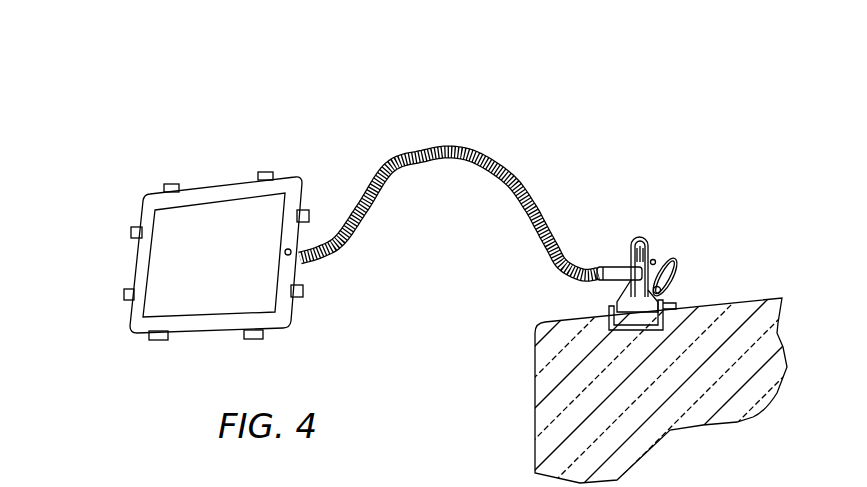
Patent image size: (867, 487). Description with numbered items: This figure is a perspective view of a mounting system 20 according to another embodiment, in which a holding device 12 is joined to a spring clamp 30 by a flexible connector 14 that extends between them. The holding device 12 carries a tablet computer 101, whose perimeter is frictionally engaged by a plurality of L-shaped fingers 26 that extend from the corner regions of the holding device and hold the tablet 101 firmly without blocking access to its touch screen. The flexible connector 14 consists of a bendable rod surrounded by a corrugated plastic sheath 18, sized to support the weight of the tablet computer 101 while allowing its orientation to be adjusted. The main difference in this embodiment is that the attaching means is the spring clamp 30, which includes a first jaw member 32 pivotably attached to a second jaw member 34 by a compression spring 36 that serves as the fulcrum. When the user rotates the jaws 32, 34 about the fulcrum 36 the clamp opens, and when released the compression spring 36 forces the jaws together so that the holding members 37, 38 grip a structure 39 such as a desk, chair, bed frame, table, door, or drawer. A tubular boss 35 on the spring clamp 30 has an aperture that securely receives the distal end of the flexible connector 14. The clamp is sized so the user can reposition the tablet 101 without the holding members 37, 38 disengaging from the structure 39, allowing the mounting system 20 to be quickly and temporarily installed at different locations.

The holding device 12 is at (165, 266).
The flexible connector 14 is at (449, 176).
The corrugated plastic sheath 18 is at (517, 195).
The mounting system 20 is at (318, 90).
The fingers 26 is at (168, 188).
The spring clamp 30 is at (690, 229).
The first jaw member 32 is at (638, 237).
The second jaw member 34 is at (677, 262).
The tubular boss 35 is at (620, 267).
The compression spring 36 is at (657, 262).
The holding member 37 is at (658, 290).
The holding member 38 is at (637, 305).
The structure 39 is at (606, 416).
The tablet computer 101 is at (208, 275).